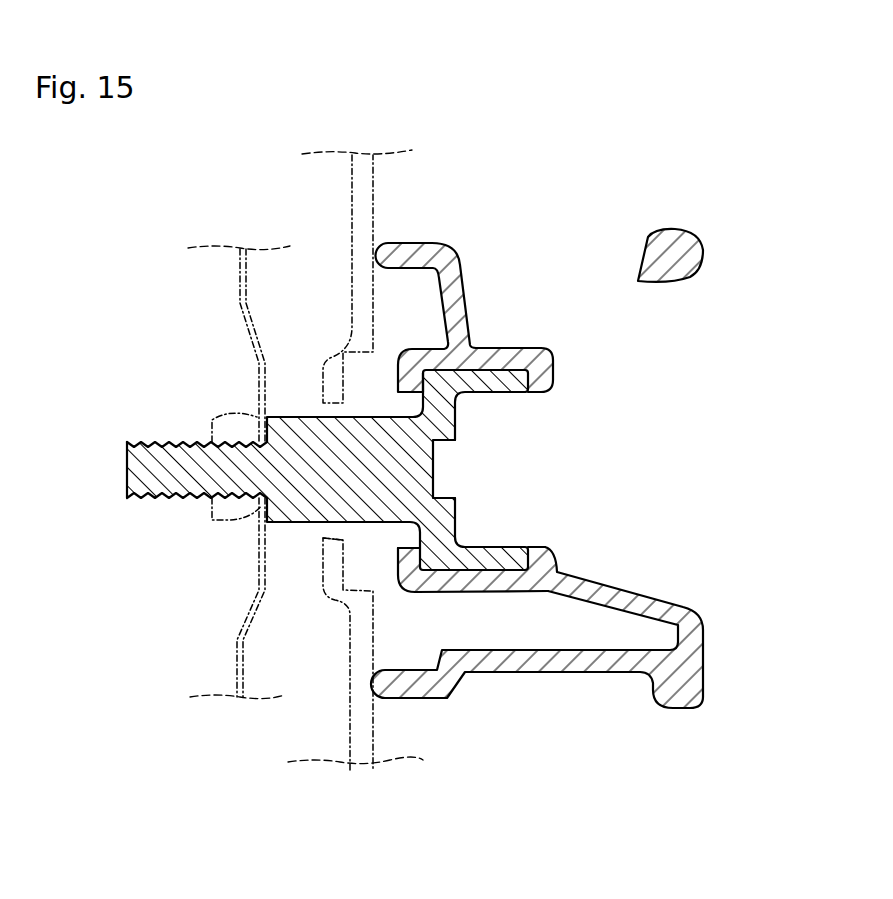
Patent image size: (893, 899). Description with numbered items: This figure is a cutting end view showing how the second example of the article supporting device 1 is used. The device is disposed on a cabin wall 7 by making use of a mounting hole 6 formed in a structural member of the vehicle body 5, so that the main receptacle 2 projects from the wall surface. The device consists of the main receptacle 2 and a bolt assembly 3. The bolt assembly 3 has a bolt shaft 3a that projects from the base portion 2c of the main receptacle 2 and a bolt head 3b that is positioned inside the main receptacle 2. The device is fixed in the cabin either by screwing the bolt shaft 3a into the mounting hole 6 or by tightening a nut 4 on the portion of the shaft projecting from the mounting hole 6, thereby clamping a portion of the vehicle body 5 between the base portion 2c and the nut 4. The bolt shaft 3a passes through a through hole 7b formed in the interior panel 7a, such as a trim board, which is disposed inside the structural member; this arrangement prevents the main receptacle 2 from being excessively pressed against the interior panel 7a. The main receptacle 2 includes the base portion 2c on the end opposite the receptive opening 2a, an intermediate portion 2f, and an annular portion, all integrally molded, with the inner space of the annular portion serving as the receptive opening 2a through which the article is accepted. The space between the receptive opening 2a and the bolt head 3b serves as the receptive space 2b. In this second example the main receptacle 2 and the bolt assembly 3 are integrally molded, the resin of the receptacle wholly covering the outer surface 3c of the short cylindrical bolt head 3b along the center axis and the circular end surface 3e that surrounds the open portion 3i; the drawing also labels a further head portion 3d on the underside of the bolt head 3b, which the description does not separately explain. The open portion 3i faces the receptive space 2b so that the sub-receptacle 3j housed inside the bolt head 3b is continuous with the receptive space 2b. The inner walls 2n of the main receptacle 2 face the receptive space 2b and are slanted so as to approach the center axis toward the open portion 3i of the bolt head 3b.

The article supporting device 1 is at (700, 231).
The main receptacle 2 is at (703, 700).
The receptive opening 2a is at (660, 326).
The receptive space 2b is at (646, 477).
The base portion 2c is at (403, 242).
The intermediate portion 2f is at (517, 675).
The inner walls 2n is at (630, 587).
The bolt assembly 3 is at (170, 497).
The bolt shaft 3a is at (162, 500).
The bolt head 3b is at (485, 368).
The outer surface 3c is at (513, 347).
The lower surface of head 3d is at (516, 393).
The circular end surface 3e is at (557, 368).
The open portion 3i is at (508, 515).
The sub-receptacle 3j is at (493, 490).
The nut 4 is at (215, 426).
The vehicle body 5 is at (238, 622).
The mounting hole 6 is at (243, 506).
The cabin wall 7 is at (358, 763).
The interior panel 7a is at (355, 691).
The through hole 7b is at (328, 528).